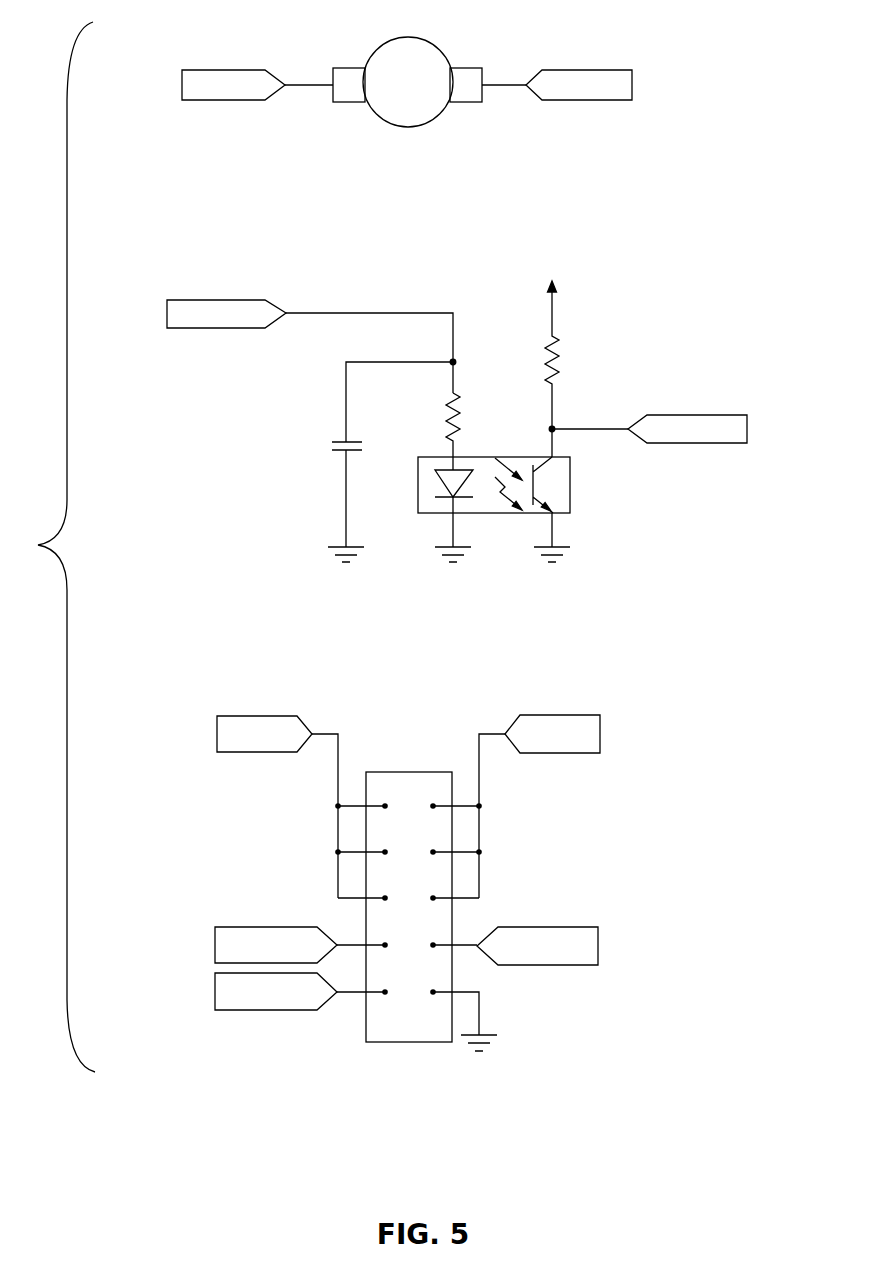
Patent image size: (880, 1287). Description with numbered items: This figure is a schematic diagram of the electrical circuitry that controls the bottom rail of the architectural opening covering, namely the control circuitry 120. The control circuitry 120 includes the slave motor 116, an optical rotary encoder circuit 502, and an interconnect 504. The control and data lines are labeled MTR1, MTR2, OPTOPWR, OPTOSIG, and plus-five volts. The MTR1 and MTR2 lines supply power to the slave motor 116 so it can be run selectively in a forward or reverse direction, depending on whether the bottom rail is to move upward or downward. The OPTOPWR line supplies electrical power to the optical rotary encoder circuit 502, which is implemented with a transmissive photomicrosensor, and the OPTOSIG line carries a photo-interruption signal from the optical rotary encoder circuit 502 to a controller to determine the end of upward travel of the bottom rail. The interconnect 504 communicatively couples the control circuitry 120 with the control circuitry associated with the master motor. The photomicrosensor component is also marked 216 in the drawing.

The slave motor 116 is at (665, 43).
The optical rotary encoder circuit 502 is at (457, 409).
The optical sensor 216 is at (594, 531).
The interconnect 504 is at (483, 875).
The control circuitry 120 is at (600, 1037).